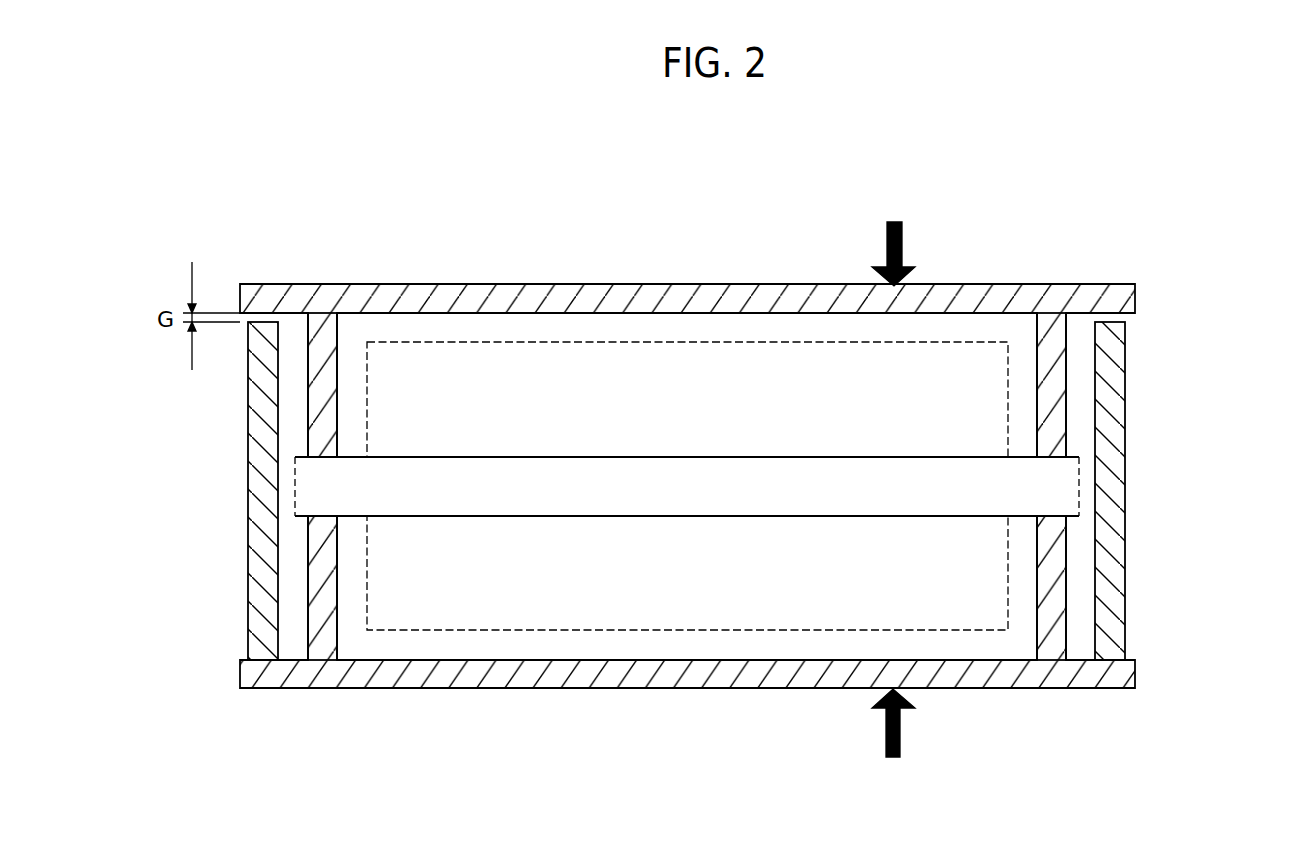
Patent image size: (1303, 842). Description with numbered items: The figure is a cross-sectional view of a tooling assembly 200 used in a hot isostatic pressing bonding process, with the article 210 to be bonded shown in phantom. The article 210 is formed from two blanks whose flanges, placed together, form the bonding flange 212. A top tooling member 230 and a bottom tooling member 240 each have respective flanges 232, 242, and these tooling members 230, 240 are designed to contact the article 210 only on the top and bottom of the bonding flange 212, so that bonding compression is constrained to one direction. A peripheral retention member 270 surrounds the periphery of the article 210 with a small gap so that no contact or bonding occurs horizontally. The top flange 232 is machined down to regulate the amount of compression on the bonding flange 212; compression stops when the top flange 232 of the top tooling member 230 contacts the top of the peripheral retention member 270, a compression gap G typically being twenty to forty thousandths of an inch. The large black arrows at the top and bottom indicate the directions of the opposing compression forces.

The pressing apparatus 200 is at (1174, 265).
The article 210 is at (727, 342).
The bonding flange 212 is at (293, 470).
The top tooling member 230 is at (412, 292).
The top flange 232 is at (288, 290).
The bottom tooling member 240 is at (373, 677).
The flange 242 is at (265, 676).
The peripheral retention member 270 is at (263, 515).